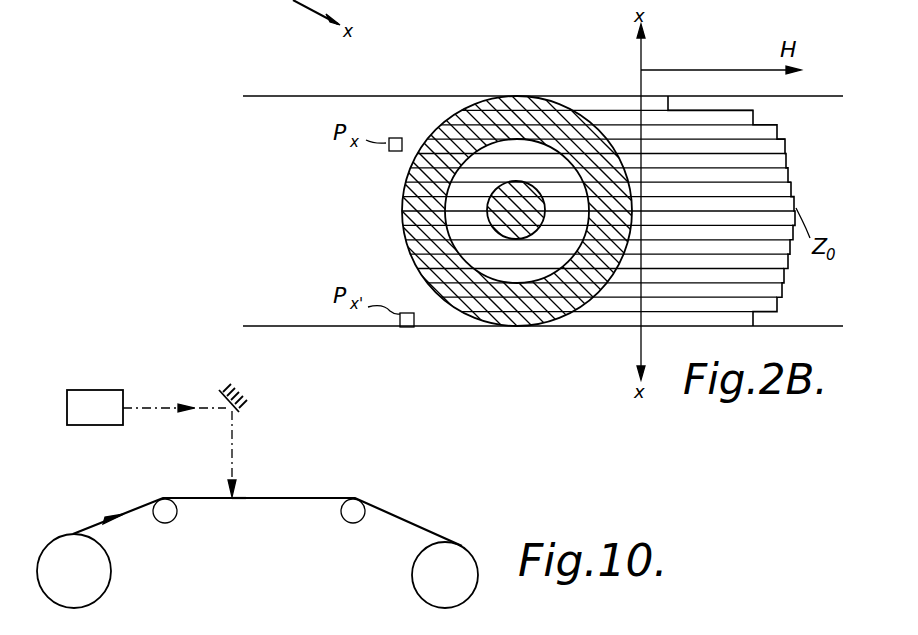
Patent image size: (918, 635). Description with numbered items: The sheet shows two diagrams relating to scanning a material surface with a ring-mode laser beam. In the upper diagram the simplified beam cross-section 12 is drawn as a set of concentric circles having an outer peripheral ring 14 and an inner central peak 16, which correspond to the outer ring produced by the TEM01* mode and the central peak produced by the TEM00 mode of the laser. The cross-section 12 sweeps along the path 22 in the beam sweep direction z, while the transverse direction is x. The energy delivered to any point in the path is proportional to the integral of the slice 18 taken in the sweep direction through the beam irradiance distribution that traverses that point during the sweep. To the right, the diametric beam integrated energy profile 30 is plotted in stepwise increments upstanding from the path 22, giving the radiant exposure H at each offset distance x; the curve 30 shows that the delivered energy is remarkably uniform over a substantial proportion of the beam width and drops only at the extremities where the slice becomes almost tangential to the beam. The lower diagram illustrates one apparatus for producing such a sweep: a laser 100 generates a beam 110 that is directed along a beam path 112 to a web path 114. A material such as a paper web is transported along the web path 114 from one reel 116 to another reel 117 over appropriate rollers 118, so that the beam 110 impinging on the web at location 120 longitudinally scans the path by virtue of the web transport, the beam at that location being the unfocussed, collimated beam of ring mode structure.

In FIG. 2B, the beam cross-section 12 is at (482, 314).
In FIG. 2B, the outer peripheral ring 14 is at (517, 302).
In FIG. 2B, the inner central peak 16 is at (527, 232).
In FIG. 2B, the slice 18 is at (483, 136).
In FIG. 2B, the path 22 is at (275, 96).
In FIG. 2B, the diametric beam integrated energy profile 30 is at (787, 144).
In FIG. 10, the laser 100 is at (80, 390).
In FIG. 10, the beam 110 is at (137, 400).
In FIG. 10, the beam path 112 is at (236, 461).
In FIG. 10, the web path 114 is at (301, 497).
In FIG. 10, the reel 116 is at (111, 571).
In FIG. 10, the reel 117 is at (412, 578).
In FIG. 10, the rollers 118 is at (169, 521).
In FIG. 10, the location 120 is at (238, 499).